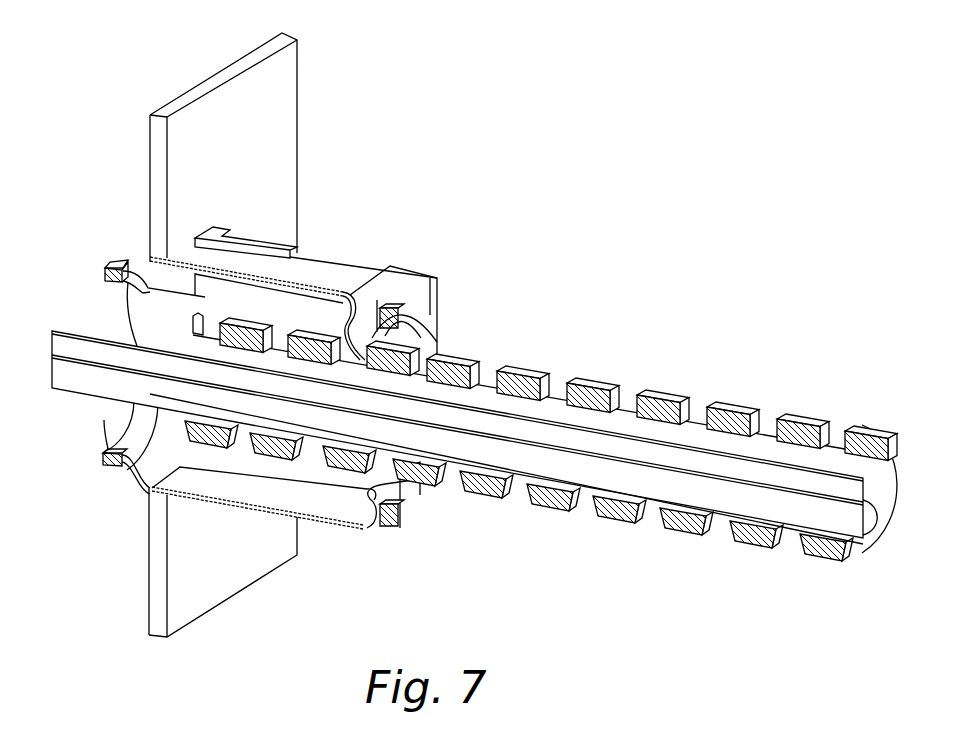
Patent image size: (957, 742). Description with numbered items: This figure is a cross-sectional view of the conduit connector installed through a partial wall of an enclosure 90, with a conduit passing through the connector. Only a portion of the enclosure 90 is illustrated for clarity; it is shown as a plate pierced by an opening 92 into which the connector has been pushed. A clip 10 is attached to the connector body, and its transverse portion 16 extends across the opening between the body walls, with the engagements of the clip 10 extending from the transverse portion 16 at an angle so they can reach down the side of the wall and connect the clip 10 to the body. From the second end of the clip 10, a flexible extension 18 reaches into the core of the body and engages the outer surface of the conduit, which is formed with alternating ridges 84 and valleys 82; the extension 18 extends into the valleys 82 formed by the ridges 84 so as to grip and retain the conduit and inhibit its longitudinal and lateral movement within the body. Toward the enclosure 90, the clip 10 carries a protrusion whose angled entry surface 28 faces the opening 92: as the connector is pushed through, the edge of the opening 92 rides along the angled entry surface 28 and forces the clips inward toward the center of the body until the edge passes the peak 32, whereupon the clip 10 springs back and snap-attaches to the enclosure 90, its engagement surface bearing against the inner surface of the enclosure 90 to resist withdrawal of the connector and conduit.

The clip 10 is at (298, 262).
The transverse portion 16 is at (342, 275).
The extension 18 is at (400, 330).
The angled entry surface 28 is at (140, 258).
The peak 32 is at (148, 490).
The valleys 82 is at (520, 483).
The ridges 84 is at (655, 392).
The enclosure 90 is at (275, 145).
The opening 92 is at (150, 180).